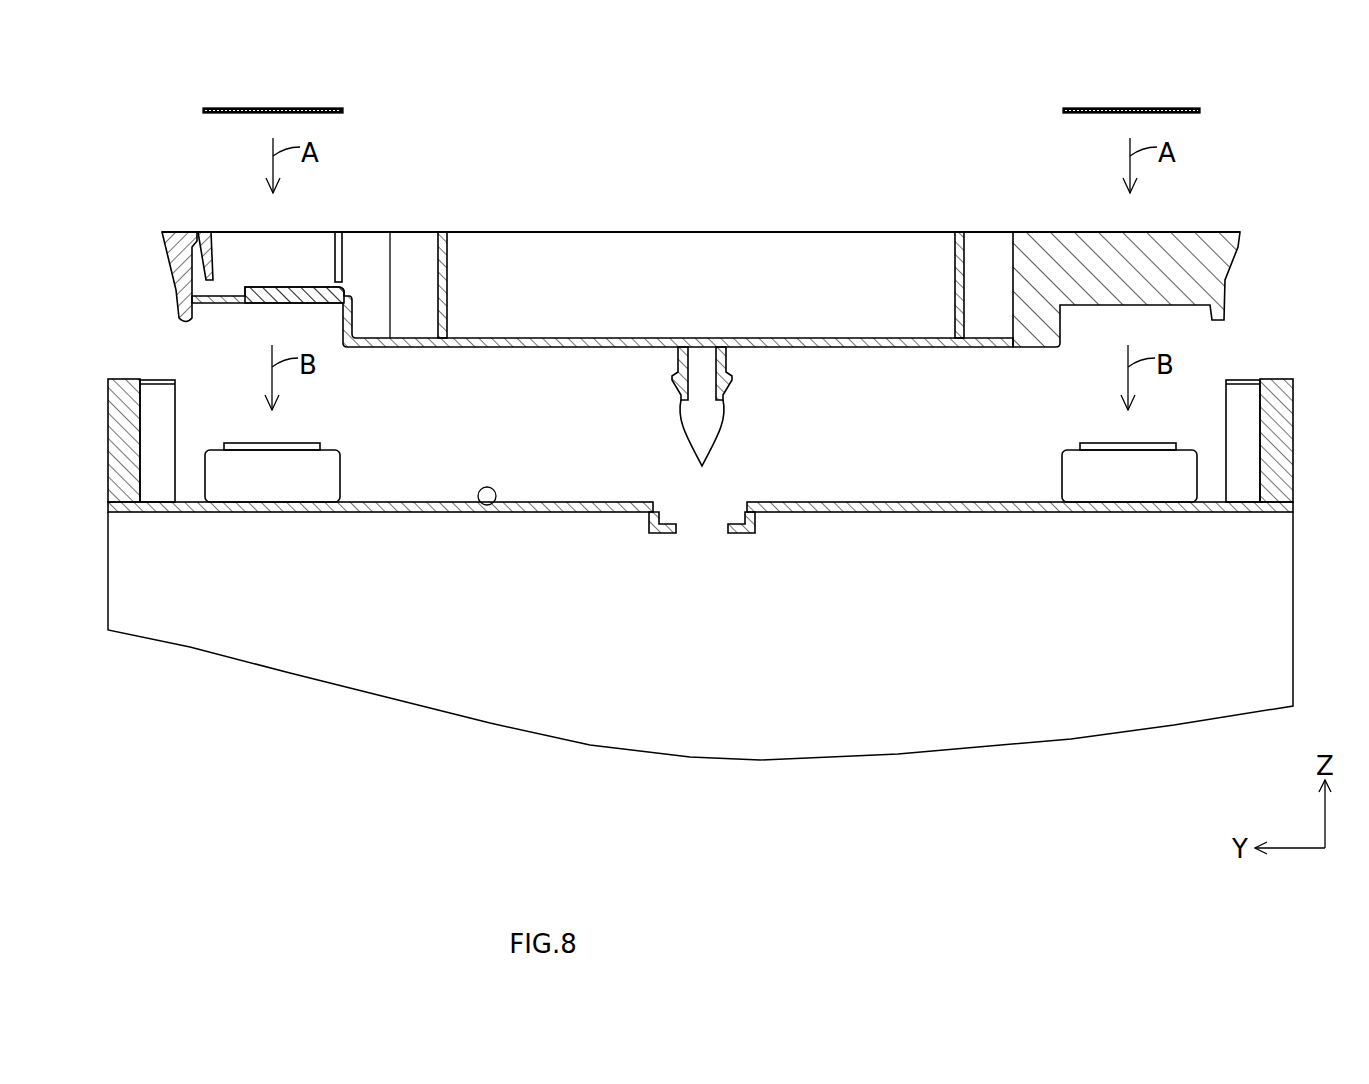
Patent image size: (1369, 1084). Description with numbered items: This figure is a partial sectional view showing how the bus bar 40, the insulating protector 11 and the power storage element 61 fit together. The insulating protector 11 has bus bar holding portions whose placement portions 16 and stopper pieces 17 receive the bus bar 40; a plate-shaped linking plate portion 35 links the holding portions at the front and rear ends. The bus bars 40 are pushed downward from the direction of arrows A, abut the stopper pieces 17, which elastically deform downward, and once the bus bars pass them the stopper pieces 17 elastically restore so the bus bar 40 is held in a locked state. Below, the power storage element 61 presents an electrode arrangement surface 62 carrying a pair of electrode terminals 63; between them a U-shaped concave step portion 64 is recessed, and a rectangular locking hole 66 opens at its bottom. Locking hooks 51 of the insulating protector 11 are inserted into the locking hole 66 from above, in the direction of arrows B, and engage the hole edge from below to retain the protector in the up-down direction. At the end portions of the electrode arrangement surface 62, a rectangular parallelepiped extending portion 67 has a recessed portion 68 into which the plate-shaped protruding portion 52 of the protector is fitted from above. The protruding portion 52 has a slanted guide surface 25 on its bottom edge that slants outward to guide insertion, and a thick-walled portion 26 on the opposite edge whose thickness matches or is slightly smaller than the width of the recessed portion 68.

The insulating protector 11 is at (1040, 243).
The placement portion 16 is at (289, 292).
The stopper piece 17 is at (216, 258).
The slanted guide surface 25 is at (165, 264).
The thick-walled portion 26 is at (164, 237).
The linking plate portion 35 is at (838, 340).
The bus bar 40 is at (281, 107).
The locking hook 51 is at (702, 423).
The protruding portion 52 is at (701, 277).
The power storage element 61 is at (1278, 645).
The electrode arrangement surface 62 is at (505, 512).
The electrode terminal 63 is at (277, 470).
The step portion 64 is at (753, 532).
The locking hole 66 is at (685, 530).
The extending portion 67 is at (124, 458).
The recessed portion 68 is at (158, 400).